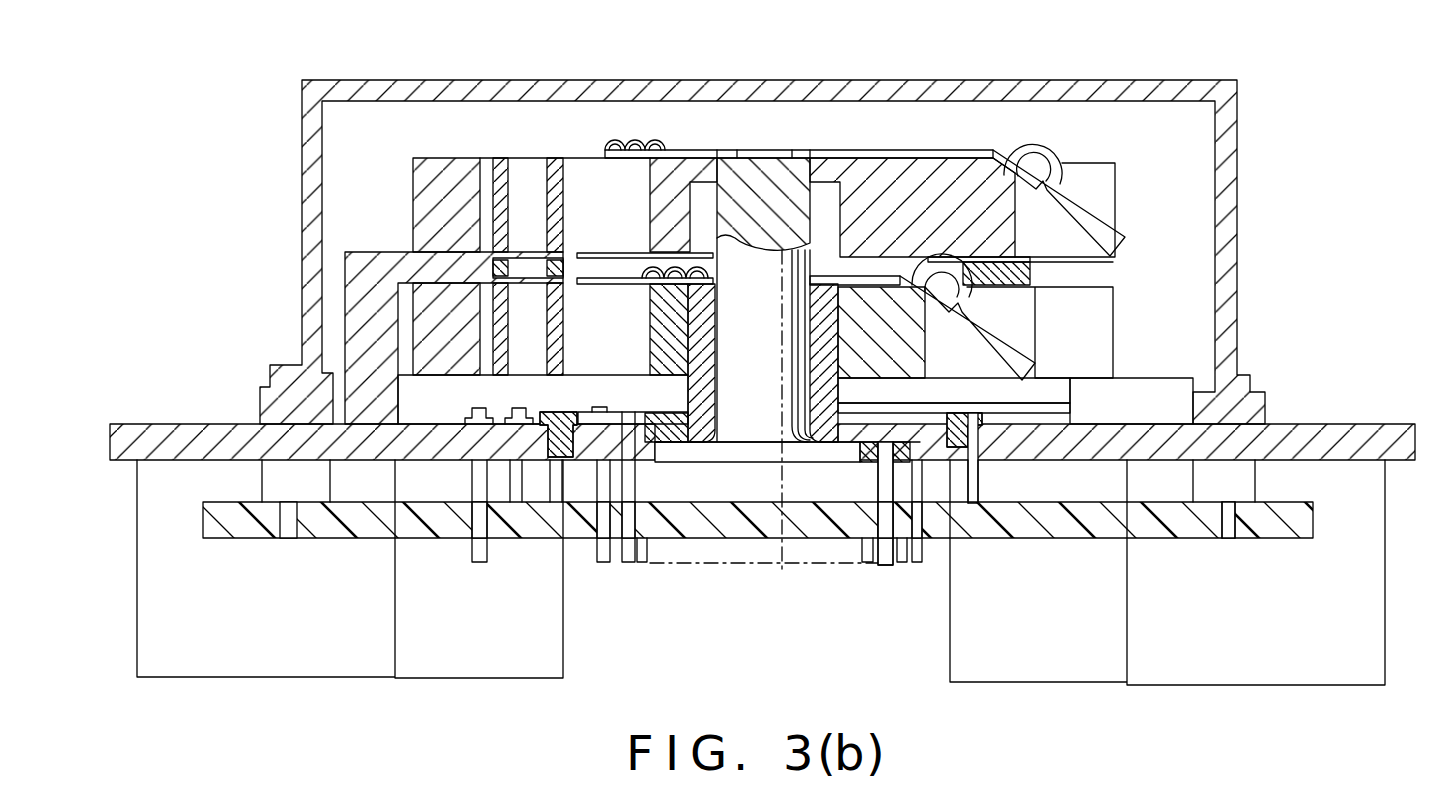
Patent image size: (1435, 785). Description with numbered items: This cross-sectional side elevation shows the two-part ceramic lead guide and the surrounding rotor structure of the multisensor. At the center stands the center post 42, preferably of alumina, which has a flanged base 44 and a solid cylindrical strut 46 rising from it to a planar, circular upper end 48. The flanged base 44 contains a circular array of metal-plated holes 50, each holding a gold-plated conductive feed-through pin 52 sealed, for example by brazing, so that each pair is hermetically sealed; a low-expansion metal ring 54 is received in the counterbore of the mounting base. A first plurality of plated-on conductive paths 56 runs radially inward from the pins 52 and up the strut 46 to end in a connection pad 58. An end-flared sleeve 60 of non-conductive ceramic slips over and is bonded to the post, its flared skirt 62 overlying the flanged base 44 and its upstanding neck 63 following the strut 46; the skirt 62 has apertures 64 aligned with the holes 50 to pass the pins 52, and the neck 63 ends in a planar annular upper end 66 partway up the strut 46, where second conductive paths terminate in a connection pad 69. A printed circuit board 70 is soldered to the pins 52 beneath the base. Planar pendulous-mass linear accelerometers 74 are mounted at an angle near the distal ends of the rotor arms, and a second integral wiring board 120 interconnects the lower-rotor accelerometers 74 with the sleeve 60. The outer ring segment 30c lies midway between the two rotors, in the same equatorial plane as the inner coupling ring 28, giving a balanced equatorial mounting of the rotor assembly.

The center post 42 is at (776, 146).
The flanged base 44 is at (672, 452).
The solid cylindrical strut 46 is at (752, 178).
The planar circular upper end 48 is at (800, 152).
The metal-plated holes 50 is at (887, 455).
The conductive feed-through pin 52 is at (887, 555).
The ring 54 is at (953, 445).
The first plurality of plated-on conductive paths 56 is at (800, 262).
The connection pad 58 is at (718, 150).
The end-flared sleeve 60 is at (706, 243).
The flared skirt 62 is at (573, 430).
The upstanding neck 63 is at (688, 332).
The apertures 64 is at (642, 428).
The planar annular upper end 66 is at (810, 262).
The connection pad 69 is at (712, 281).
The printed circuit board 70 is at (1175, 540).
The pendulous-mass linear accelerometers 74 is at (1002, 337).
The inner coupling ring 28 is at (1033, 273).
The outer ring segment 30c is at (368, 252).
The second integral wiring board 120 is at (650, 282).